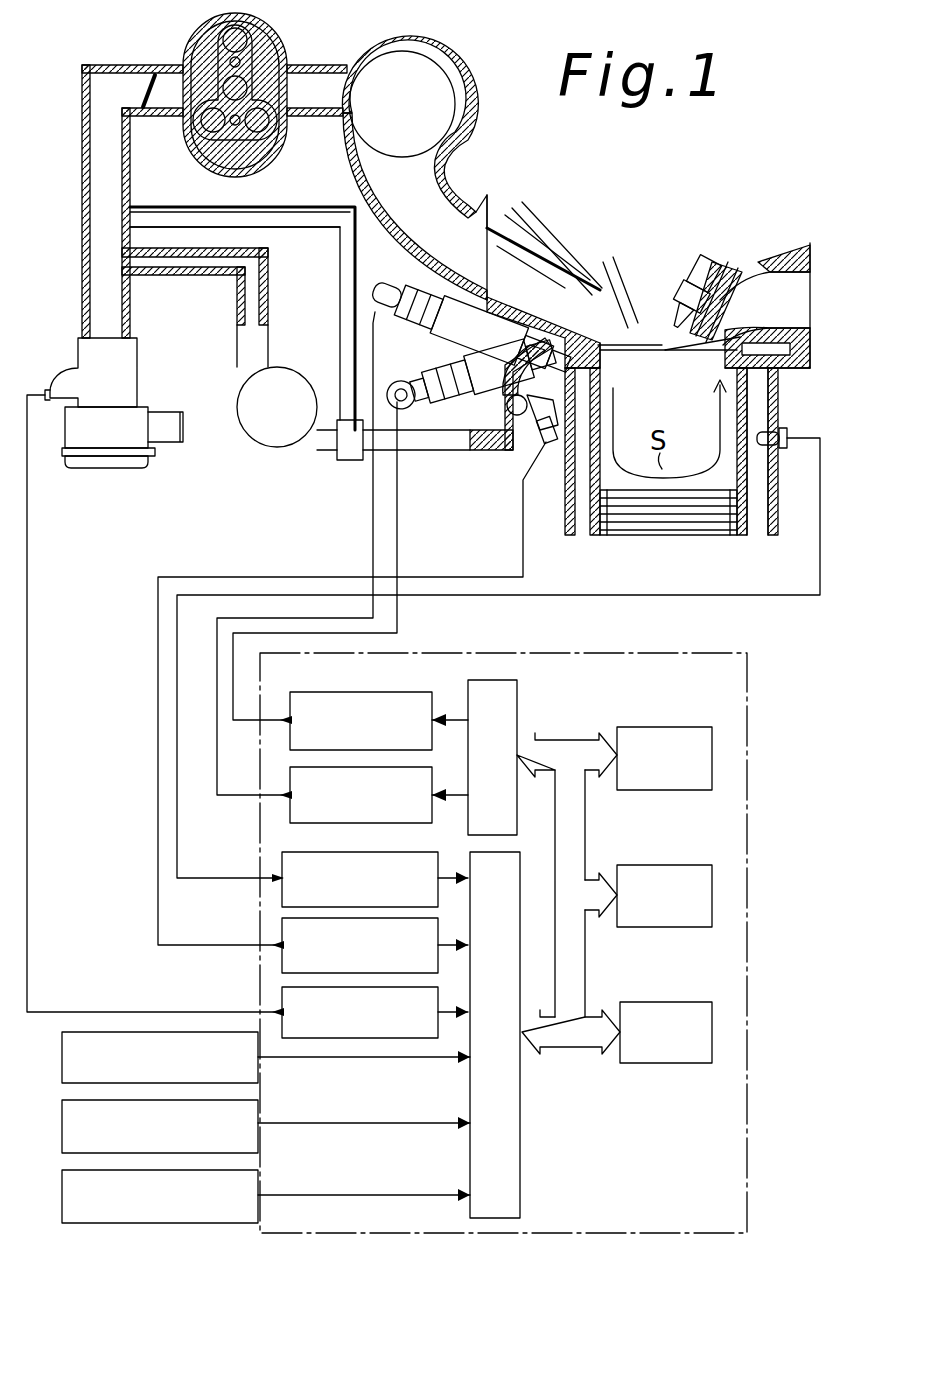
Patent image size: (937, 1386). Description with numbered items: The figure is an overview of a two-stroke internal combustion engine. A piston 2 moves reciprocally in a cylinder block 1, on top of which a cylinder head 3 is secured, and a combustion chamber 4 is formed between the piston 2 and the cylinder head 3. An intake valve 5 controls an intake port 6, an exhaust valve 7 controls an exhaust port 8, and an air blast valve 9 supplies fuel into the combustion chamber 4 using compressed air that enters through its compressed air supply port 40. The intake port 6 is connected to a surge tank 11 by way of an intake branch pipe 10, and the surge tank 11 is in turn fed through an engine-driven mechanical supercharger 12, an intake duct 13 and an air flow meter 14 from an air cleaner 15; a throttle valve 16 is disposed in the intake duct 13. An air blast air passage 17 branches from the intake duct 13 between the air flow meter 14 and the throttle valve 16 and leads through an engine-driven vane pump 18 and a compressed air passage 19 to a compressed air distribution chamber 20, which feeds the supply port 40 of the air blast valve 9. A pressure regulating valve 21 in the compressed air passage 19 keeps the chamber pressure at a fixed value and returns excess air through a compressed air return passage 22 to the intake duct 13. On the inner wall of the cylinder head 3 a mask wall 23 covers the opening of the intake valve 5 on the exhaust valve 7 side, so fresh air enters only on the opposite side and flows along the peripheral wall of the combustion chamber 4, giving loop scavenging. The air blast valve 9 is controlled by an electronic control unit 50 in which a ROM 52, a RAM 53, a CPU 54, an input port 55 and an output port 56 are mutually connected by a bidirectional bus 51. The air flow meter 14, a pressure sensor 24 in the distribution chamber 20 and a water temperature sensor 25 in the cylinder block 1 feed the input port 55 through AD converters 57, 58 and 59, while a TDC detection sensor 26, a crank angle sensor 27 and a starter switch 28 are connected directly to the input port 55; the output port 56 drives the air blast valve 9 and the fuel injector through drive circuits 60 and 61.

The cylinder block 1 is at (768, 400).
The piston 2 is at (686, 536).
The cylinder head 3 is at (680, 298).
The combustion chamber 4 is at (725, 478).
The intake valve 5 is at (640, 285).
The intake port 6 is at (551, 285).
The exhaust valve 7 is at (702, 270).
The exhaust port 8 is at (765, 300).
The air blast valve 9 is at (405, 297).
The intake duct 10 is at (447, 184).
The surge tank 11 is at (432, 50).
The mechanical supercharger 12 is at (286, 26).
The intake duct 13 is at (82, 146).
The air flow meter 14 is at (136, 372).
The air cleaner 15 is at (124, 440).
The throttle valve 16 is at (148, 72).
The air blast air passage 17 is at (191, 281).
The vane pump 18 is at (270, 436).
The compressed air passage 19 is at (478, 453).
The compressed air distribution chamber 20 is at (505, 410).
The pressure regulating valve 21 is at (350, 462).
The compressed air return passage 22 is at (303, 215).
The mask wall 23 is at (663, 352).
The pressure sensor 24 is at (538, 436).
The water temperature sensor 25 is at (786, 434).
The TDC detection sensor 26 is at (262, 1078).
The crank angle sensor 27 is at (262, 1142).
The starter switch 28 is at (262, 1210).
The compressed air supply port 40 is at (546, 445).
The electronic control unit 50 is at (747, 787).
The bidirectional bus 51 is at (570, 740).
The ROM 52 is at (666, 727).
The RAM 53 is at (666, 864).
The CPU 54 is at (670, 1002).
The input port 55 is at (522, 1163).
The output port 56 is at (508, 680).
The AD converter 57 is at (282, 998).
The AD converter 58 is at (282, 938).
The AD converter 59 is at (282, 872).
The drive circuit 60 is at (290, 778).
The drive circuit 61 is at (286, 712).